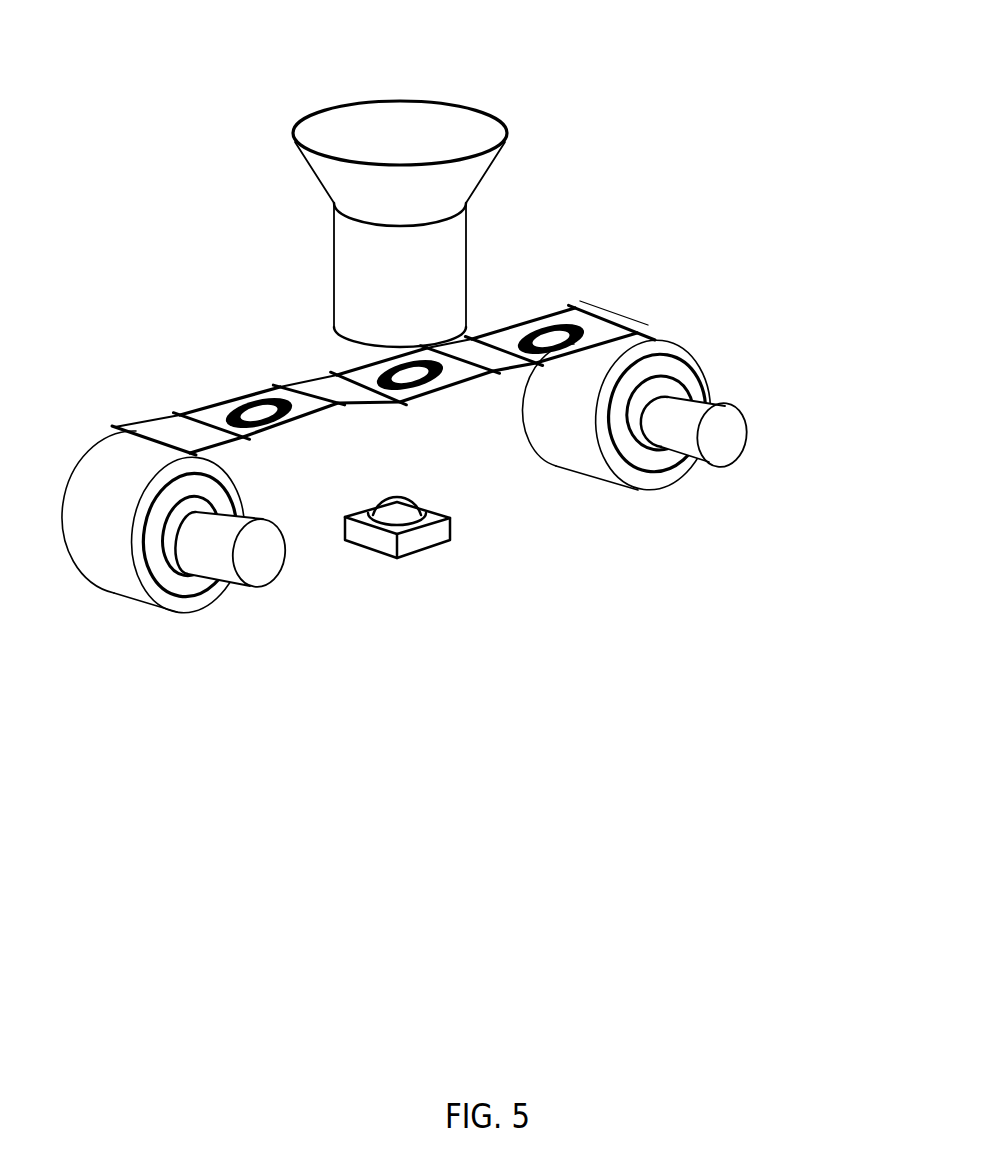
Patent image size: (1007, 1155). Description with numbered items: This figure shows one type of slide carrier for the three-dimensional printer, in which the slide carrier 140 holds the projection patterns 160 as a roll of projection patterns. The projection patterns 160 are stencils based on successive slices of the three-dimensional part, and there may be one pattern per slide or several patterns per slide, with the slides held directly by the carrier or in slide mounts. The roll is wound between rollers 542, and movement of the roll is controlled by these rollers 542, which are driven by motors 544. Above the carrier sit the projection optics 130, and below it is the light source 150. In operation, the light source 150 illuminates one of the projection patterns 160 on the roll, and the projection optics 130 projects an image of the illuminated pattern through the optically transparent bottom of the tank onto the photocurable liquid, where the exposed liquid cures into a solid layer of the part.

The projection optics 130 is at (493, 112).
The projection patterns 160 is at (335, 375).
The slide carrier 140 is at (630, 338).
The rollers 542 is at (673, 467).
The motors 544 is at (740, 453).
The light source 150 is at (400, 553).